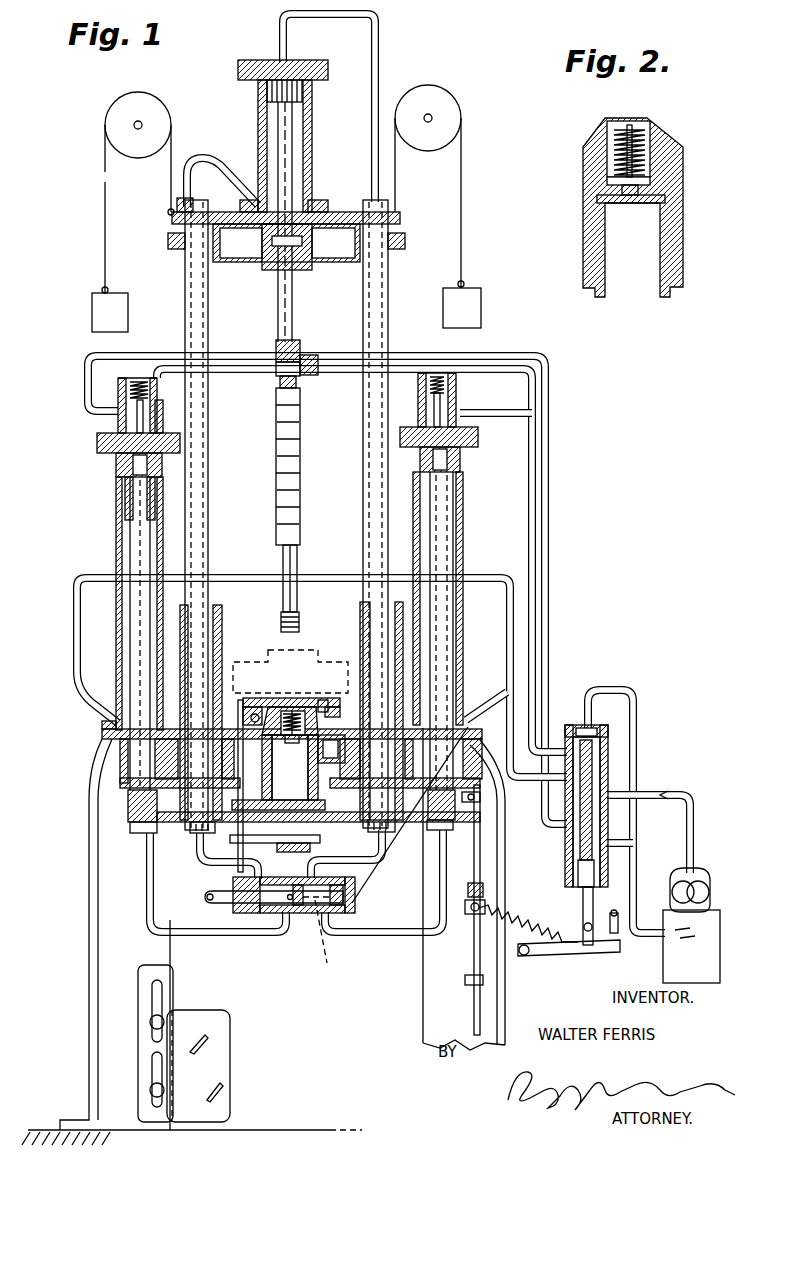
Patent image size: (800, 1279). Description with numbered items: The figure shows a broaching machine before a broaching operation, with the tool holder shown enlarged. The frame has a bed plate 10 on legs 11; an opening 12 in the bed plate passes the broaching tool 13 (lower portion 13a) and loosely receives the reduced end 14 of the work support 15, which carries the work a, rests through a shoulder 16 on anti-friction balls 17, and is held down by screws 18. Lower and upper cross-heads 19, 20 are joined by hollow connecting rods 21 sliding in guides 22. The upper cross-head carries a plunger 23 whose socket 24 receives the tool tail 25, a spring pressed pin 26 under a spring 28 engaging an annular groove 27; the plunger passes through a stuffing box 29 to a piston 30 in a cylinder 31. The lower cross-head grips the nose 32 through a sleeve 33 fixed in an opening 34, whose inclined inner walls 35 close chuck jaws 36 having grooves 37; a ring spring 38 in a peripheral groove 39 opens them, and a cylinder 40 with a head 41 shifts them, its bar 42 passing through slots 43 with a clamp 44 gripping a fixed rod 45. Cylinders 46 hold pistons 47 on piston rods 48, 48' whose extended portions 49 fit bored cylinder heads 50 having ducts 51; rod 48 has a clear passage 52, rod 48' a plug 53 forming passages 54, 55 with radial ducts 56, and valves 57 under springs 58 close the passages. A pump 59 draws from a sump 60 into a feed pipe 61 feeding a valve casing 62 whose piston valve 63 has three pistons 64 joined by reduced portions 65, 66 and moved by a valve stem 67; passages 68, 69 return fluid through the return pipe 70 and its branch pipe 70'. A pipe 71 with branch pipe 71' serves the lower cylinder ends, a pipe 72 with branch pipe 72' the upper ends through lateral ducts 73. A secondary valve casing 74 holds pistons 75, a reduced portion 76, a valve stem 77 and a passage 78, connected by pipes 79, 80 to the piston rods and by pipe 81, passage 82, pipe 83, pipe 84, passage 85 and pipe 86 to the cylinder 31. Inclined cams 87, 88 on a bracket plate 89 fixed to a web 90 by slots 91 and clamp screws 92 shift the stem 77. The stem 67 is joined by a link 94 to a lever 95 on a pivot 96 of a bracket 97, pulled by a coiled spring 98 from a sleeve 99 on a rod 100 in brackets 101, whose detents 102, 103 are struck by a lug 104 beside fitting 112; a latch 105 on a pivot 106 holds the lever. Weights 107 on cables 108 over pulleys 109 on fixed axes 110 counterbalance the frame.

In FIG. 1, the bed plate 10 is at (103, 731).
In FIG. 1, the legs 11 is at (90, 1024).
In FIG. 1, the opening 12 is at (325, 765).
In FIG. 1, the broaching tool 13 is at (301, 437).
In FIG. 1, the shaft lower portion 13a is at (300, 540).
In FIG. 1, the reduced end 14 is at (330, 746).
In FIG. 1, the work support 15 is at (322, 700).
In FIG. 1, the annular flange 16 is at (246, 708).
In FIG. 1, the anti-friction balls 17 is at (252, 705).
In FIG. 1, the screws 18 is at (336, 713).
In FIG. 1, the lower cross-head 19 is at (127, 800).
In FIG. 1, the upper cross-head 20 is at (340, 212).
In FIG. 1, the connecting rods 21 is at (209, 312).
In FIG. 1, the guides 22 is at (220, 617).
In FIG. 1, the plunger 23 is at (293, 300).
In FIG. 1, the socket 24 is at (298, 352).
In FIG. 1, the tail 25 is at (279, 376).
In FIG. 1, the spring pressed pin 26 is at (293, 384).
In FIG. 1, the annular groove 27 is at (284, 350).
In FIG. 1, the spring 28 is at (306, 375).
In FIG. 1, the stuffing box 29 is at (266, 266).
In FIG. 1, the piston 30 is at (278, 90).
In FIG. 1, the cylinder 31 is at (313, 118).
In FIG. 1, the nose 32 is at (300, 625).
In FIG. 1, the sleeve 33 is at (320, 782).
In FIG. 2, the sleeve 33 is at (676, 216).
In FIG. 1, the opening 34 is at (320, 797).
In FIG. 1, the inwardly inclined inner walls 35 is at (287, 714).
In FIG. 2, the inwardly inclined inner walls 35 is at (622, 135).
In FIG. 1, the chuck jaws 36 is at (292, 779).
In FIG. 2, the chuck jaws 36 is at (656, 203).
In FIG. 1, the grooves 37 is at (293, 732).
In FIG. 2, the grooves 37 is at (660, 122).
In FIG. 2, the spring 38 is at (610, 181).
In FIG. 2, the peripheral groove 39 is at (652, 180).
In FIG. 1, the cylinder 40 is at (289, 799).
In FIG. 2, the cylinder 40 is at (658, 296).
In FIG. 1, the head 41 is at (293, 751).
In FIG. 2, the head 41 is at (660, 194).
In FIG. 1, the bar 42 is at (293, 855).
In FIG. 1, the slots 43 is at (266, 816).
In FIG. 1, the clamp 44 is at (230, 838).
In FIG. 1, the rod 45 is at (238, 877).
In FIG. 1, the cylinders 46 is at (118, 540).
In FIG. 1, the pistons 47 is at (120, 478).
In FIG. 1, the piston rod 48 is at (461, 631).
In FIG. 1, the piston rod 48' is at (106, 649).
In FIG. 1, the extended portion 49 is at (100, 430).
In FIG. 1, the cylinder head 50 is at (119, 392).
In FIG. 1, the ducts 51 is at (160, 400).
In FIG. 1, the passage 52 is at (442, 491).
In FIG. 1, the plug 53 is at (100, 446).
In FIG. 1, the passage 54 is at (177, 415).
In FIG. 1, the passage 55 is at (138, 560).
In FIG. 1, the radial ducts 56 is at (126, 497).
In FIG. 1, the valve 57 is at (150, 385).
In FIG. 1, the spring 58 is at (137, 380).
In FIG. 1, the pump 59 is at (703, 880).
In FIG. 1, the sump 60 is at (691, 946).
In FIG. 1, the feed pipe 61 is at (690, 808).
In FIG. 1, the valve casing 62 is at (605, 776).
In FIG. 1, the piston valve 63 is at (596, 735).
In FIG. 1, the pistons 64 is at (567, 735).
In FIG. 1, the reduced portion 65 is at (605, 826).
In FIG. 1, the reduced portion 66 is at (605, 760).
In FIG. 1, the valve stem 67 is at (583, 903).
In FIG. 1, the passage 68 is at (575, 754).
In FIG. 1, the transverse passage 69 is at (605, 806).
In FIG. 1, the return pipe 70 is at (637, 853).
In FIG. 1, the branch pipe 70' is at (650, 824).
In FIG. 1, the pipe 71 is at (498, 732).
In FIG. 1, the branch pipe 71' is at (486, 685).
In FIG. 1, the pipe 72 is at (564, 601).
In FIG. 1, the branch pipe 72' is at (368, 560).
In FIG. 1, the lateral ducts 73 is at (118, 411).
In FIG. 1, the valve casing 74 is at (356, 895).
In FIG. 1, the pistons 75 is at (290, 916).
In FIG. 1, the reduced portion 76 is at (302, 906).
In FIG. 1, the valve stem 77 is at (274, 909).
In FIG. 1, the passage 78 is at (325, 937).
In FIG. 1, the pipe 79 is at (396, 934).
In FIG. 1, the pipe 80 is at (200, 934).
In FIG. 1, the pipe 81 is at (380, 22).
In FIG. 1, the passage 82 is at (386, 293).
In FIG. 1, the pipe 83 is at (378, 862).
In FIG. 1, the pipe 84 is at (212, 160).
In FIG. 1, the passage 85 is at (198, 416).
In FIG. 1, the pipe 86 is at (235, 868).
In FIG. 1, the inclined cam 87 is at (222, 1096).
In FIG. 1, the inclined cam 88 is at (207, 1040).
In FIG. 1, the bracket plate 89 is at (226, 1062).
In FIG. 1, the web 90 is at (94, 972).
In FIG. 1, the vertical slots 91 is at (152, 999).
In FIG. 1, the clamp screws 92 is at (162, 1018).
In FIG. 1, the link 94 is at (569, 965).
In FIG. 1, the lever 95 is at (577, 983).
In FIG. 1, the pivot 96 is at (531, 968).
In FIG. 1, the fixed bracket 97 is at (512, 949).
In FIG. 1, the coiled spring 98 is at (516, 914).
In FIG. 1, the sleeve 99 is at (470, 912).
In FIG. 1, the rod 100 is at (480, 852).
In FIG. 1, the brackets 101 is at (483, 888).
In FIG. 1, the upper detent 102 is at (481, 797).
In FIG. 1, the lower detent 103 is at (466, 982).
In FIG. 1, the lug 104 is at (470, 822).
In FIG. 1, the latch 105 is at (618, 934).
In FIG. 1, the pivot 106 is at (615, 920).
In FIG. 1, the weights 107 is at (96, 307).
In FIG. 1, the cables 108 is at (104, 228).
In FIG. 1, the pulleys 109 is at (122, 108).
In FIG. 1, the fixed axes 110 is at (134, 126).
In FIG. 1, the bracket 112 is at (124, 780).
In FIG. 1, the work a is at (328, 660).